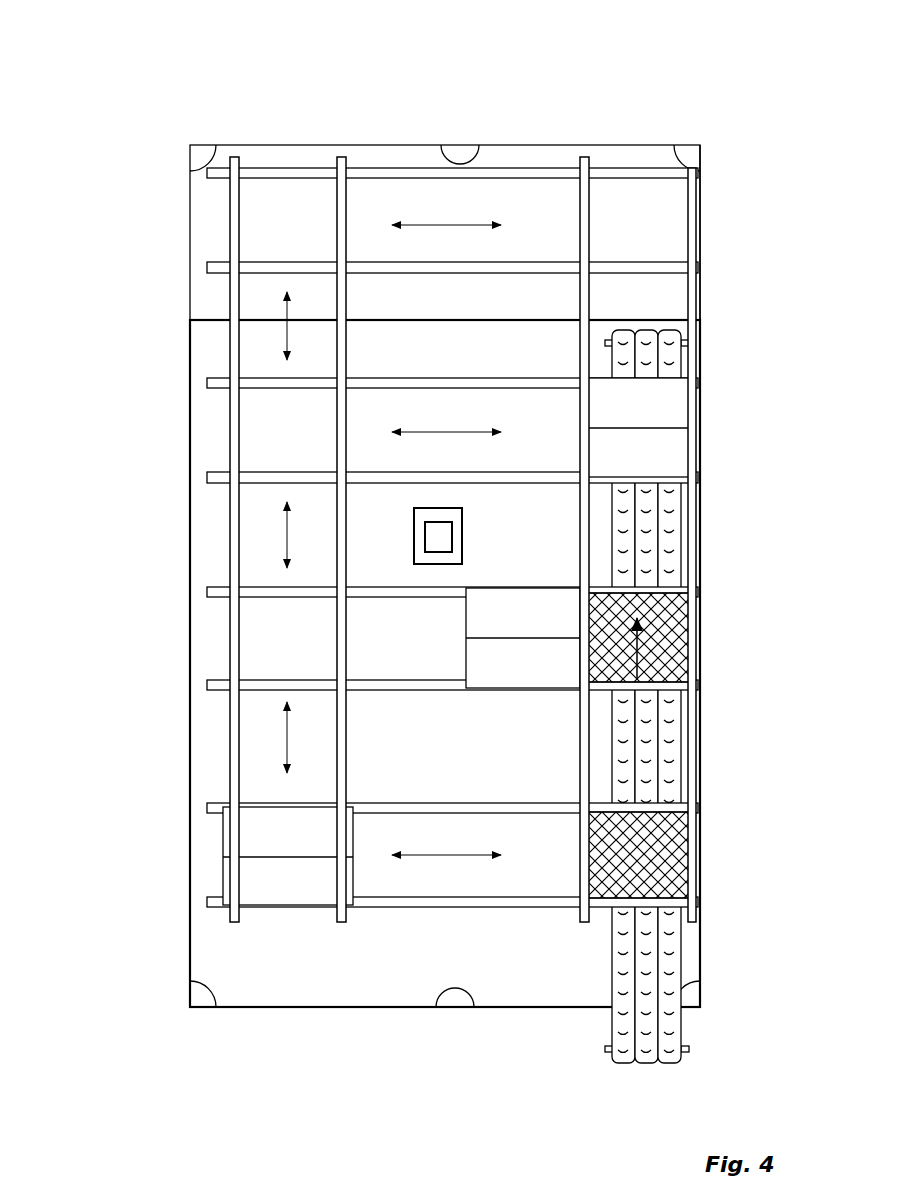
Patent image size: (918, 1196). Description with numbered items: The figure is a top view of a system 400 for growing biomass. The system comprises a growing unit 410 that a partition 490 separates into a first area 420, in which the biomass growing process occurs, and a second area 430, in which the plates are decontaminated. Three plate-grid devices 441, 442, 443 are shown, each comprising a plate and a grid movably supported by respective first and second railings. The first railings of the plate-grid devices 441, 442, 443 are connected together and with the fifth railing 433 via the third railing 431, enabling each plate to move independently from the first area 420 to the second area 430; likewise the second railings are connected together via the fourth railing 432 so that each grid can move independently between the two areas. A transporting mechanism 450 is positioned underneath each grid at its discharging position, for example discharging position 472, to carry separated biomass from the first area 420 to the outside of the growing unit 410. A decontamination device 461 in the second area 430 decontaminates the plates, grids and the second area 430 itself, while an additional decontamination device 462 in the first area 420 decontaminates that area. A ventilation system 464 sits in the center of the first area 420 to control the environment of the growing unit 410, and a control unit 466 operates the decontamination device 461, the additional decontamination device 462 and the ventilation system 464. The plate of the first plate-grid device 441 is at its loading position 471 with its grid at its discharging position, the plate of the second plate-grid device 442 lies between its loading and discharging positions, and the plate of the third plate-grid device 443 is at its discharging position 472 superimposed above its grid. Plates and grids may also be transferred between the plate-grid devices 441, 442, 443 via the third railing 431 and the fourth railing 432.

The system for growing biomass 400 is at (113, 82).
The growing unit 410 is at (302, 140).
The first area 420 is at (332, 973).
The second area 430 is at (547, 158).
The third railing 431 is at (338, 652).
The fourth railing 432 is at (590, 236).
The fifth railing 433 is at (220, 176).
The first plate-grid device 441 is at (220, 907).
The second plate-grid device 442 is at (268, 686).
The third plate-grid device 443 is at (268, 478).
The transporting mechanism 450 is at (647, 963).
The decontamination device 461 is at (207, 156).
The additional decontamination device 462 is at (196, 1004).
The ventilation system 464 is at (466, 508).
The control unit 466 is at (456, 538).
The loading position 471 is at (183, 803).
The discharging position 472 is at (706, 377).
The partition 490 is at (205, 318).